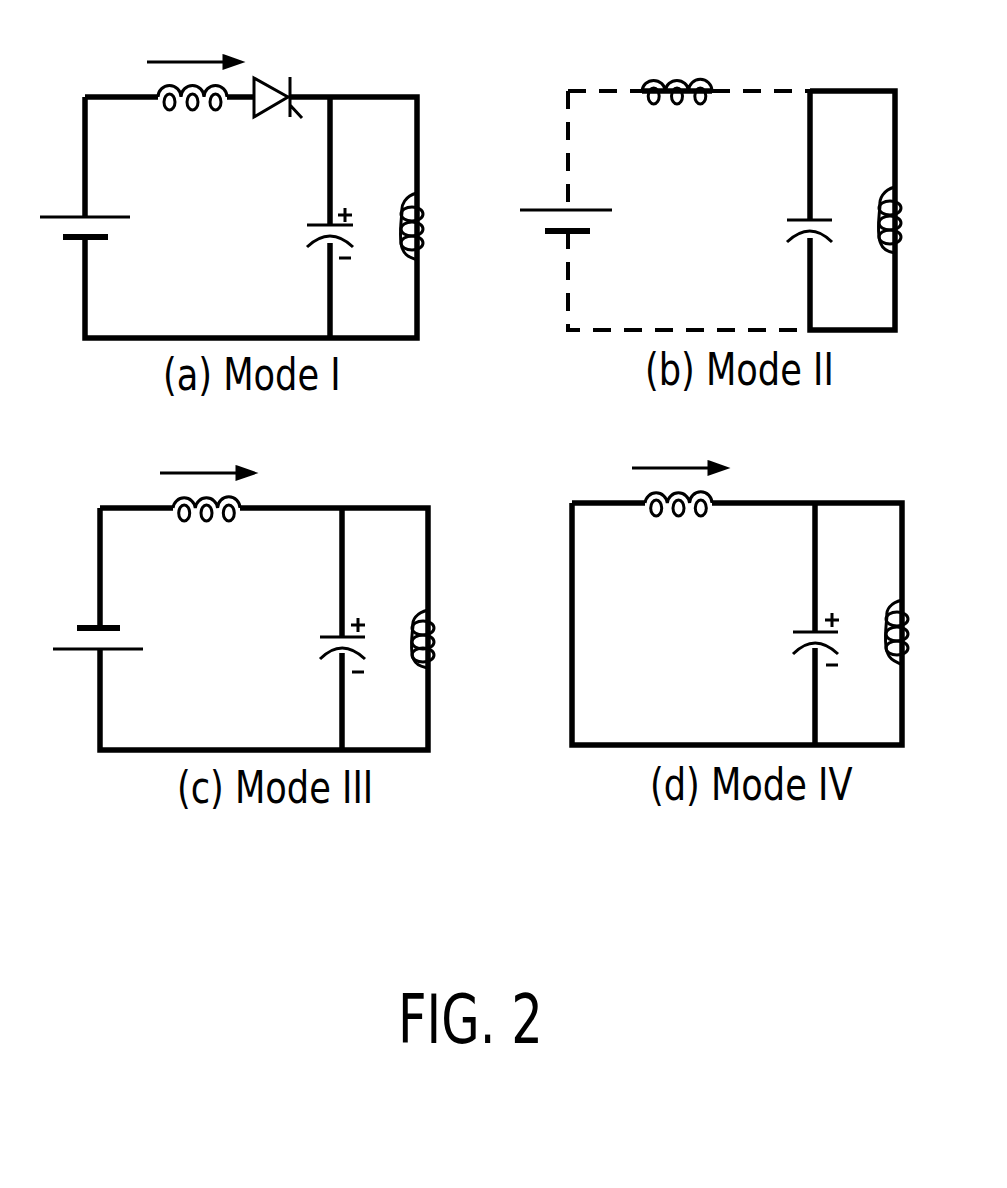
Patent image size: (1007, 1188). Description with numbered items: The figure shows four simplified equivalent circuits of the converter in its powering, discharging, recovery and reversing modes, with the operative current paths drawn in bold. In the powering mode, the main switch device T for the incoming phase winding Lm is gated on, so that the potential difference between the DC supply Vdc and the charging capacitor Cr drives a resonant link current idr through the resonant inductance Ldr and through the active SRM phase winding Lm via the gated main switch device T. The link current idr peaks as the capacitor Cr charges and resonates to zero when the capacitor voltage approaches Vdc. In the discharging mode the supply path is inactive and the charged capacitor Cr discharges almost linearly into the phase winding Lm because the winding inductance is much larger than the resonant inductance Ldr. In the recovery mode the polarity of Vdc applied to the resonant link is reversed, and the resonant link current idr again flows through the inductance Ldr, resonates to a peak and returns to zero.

The resonant inductance Ldr is at (435, 319).
The main switch device T is at (265, 80).
The unregulated DC power voltage Vdc is at (323, 401).
The capacitor Cr is at (541, 431).
The SRM phase winding Lm is at (635, 407).
The resonant link current idr is at (436, 239).